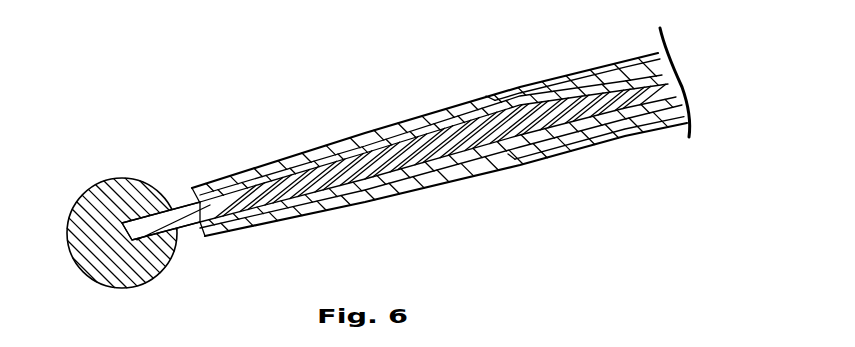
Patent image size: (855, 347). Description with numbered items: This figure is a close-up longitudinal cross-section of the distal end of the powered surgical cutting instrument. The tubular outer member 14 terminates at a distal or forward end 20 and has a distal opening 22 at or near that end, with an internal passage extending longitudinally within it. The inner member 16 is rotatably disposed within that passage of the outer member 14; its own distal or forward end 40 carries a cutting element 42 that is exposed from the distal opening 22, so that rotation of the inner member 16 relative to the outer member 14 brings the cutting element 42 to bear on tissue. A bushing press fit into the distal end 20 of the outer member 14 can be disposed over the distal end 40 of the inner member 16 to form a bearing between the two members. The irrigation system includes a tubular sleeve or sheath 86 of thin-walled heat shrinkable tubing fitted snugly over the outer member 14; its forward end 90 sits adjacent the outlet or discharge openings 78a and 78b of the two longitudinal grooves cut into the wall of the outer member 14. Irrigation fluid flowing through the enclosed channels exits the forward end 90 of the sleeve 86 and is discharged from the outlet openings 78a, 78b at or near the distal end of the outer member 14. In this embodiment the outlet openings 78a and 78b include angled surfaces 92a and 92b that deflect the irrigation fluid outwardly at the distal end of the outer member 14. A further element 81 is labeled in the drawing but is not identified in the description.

The tubular outer member 14 is at (428, 118).
The inner member 16 is at (670, 82).
The distal end of outer member 20 is at (287, 148).
The distal opening 22 is at (205, 240).
The distal end of inner member 40 is at (192, 188).
The cutting element 42 is at (79, 205).
The outlet opening 78a is at (507, 85).
The outlet opening 78b is at (540, 168).
The conductors 81 is at (357, 195).
The tubular sleeve 86 is at (642, 138).
The forward end of sleeve 90 is at (557, 160).
The angled surface 92a is at (488, 95).
The angled surface 92b is at (517, 145).